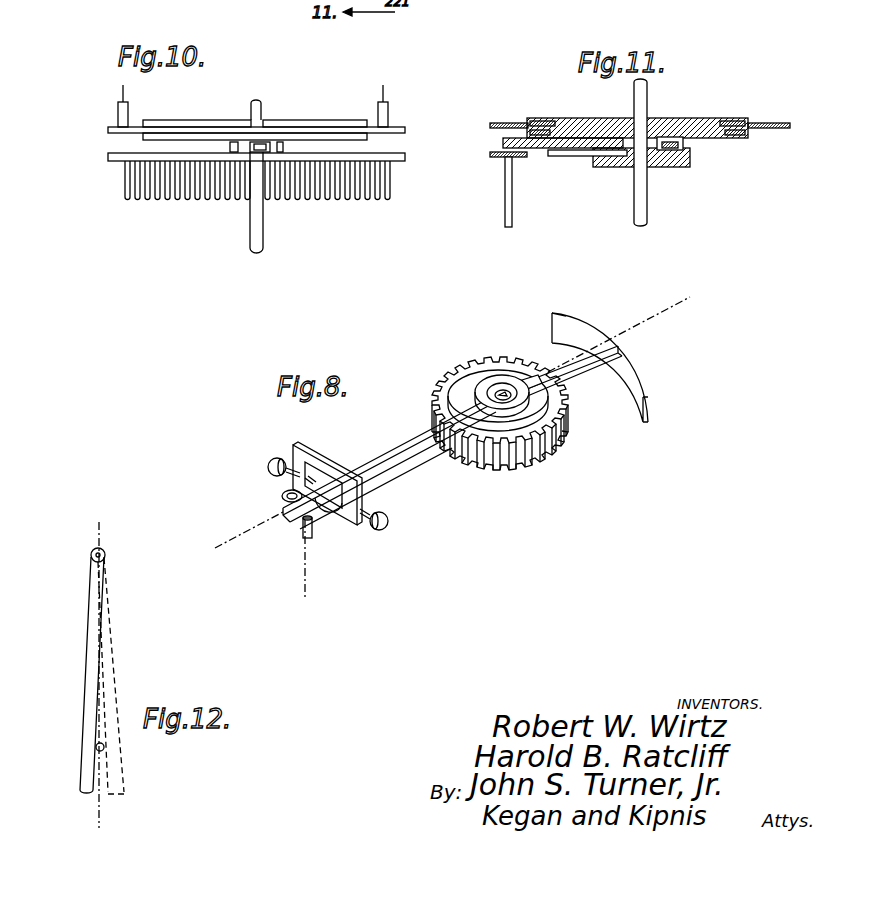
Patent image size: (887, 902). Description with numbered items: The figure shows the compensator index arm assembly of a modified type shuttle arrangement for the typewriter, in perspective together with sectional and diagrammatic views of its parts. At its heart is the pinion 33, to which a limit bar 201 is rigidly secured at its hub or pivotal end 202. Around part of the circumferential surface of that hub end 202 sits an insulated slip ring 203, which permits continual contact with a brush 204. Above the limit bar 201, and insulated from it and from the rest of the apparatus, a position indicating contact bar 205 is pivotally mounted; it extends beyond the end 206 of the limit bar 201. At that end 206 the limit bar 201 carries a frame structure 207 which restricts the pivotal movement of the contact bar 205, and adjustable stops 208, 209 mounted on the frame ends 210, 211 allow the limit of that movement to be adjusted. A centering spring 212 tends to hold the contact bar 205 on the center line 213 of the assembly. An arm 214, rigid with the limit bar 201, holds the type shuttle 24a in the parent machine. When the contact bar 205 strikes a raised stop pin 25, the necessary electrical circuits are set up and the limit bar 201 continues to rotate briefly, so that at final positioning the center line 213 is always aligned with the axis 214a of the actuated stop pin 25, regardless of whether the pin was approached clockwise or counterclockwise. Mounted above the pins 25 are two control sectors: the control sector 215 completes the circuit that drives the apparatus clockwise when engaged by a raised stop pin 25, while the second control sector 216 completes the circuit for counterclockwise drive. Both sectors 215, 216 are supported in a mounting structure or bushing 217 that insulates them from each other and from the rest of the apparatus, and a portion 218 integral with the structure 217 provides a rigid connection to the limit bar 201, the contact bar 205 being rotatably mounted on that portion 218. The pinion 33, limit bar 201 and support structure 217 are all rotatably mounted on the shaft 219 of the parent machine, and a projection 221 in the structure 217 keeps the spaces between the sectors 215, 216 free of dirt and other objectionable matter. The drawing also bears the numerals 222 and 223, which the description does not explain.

In FIG. 10, the stop pin 25 is at (176, 200).
In FIG. 11, the stop pin 25 is at (505, 193).
In FIG. 8, the stop pin 25 is at (300, 527).
In FIG. 12, the stop pin 25 is at (104, 748).
In FIG. 11, the pinion 33 is at (590, 165).
In FIG. 8, the pinion 33 is at (545, 457).
In FIG. 8, the type shuttle 24a is at (655, 405).
In FIG. 11, the limit bar 201 is at (570, 157).
In FIG. 8, the limit bar 201 is at (425, 457).
In FIG. 8, the hub or pivotal end 202 is at (532, 415).
In FIG. 11, the insulated slip ring 203 is at (683, 152).
In FIG. 8, the insulated slip ring 203 is at (507, 430).
In FIG. 11, the brush 204 is at (683, 142).
In FIG. 8, the brush 204 is at (545, 378).
In FIG. 10, the position indicating contact bar 205 is at (257, 150).
In FIG. 11, the position indicating contact bar 205 is at (503, 142).
In FIG. 8, the position indicating contact bar 205 is at (370, 470).
In FIG. 12, the position indicating contact bar 205 is at (93, 716).
In FIG. 8, the end of limit bar 206 is at (287, 484).
In FIG. 8, the frame structure 207 is at (352, 520).
In FIG. 8, the adjustable stop 208 is at (268, 466).
In FIG. 8, the adjustable stop 209 is at (388, 523).
In FIG. 8, the end of frame 210 is at (297, 470).
In FIG. 8, the end of frame 211 is at (352, 498).
In FIG. 8, the centering spring 212 is at (325, 520).
In FIG. 8, the center line 213 is at (262, 522).
In FIG. 12, the center line 213 is at (102, 817).
In FIG. 8, the arm 214 is at (570, 366).
In FIG. 8, the axis of stop pin 214a is at (305, 585).
In FIG. 10, the control sector 215 is at (135, 130).
In FIG. 11, the control sector 215 is at (512, 122).
In FIG. 10, the second control sector 216 is at (388, 128).
In FIG. 10, the mounting structure or bushing 217 is at (168, 120).
In FIG. 11, the mounting structure or bushing 217 is at (672, 120).
In FIG. 11, the portion 218 is at (630, 145).
In FIG. 10, the shaft 219 is at (258, 222).
In FIG. 11, the shaft 219 is at (645, 192).
In FIG. 8, the shaft 219 is at (500, 394).
In FIG. 12, the shaft 219 is at (92, 560).
In FIG. 10, the projection 221 is at (261, 120).
In FIG. 10, the pin 222 is at (120, 113).
In FIG. 10, the pin 223 is at (378, 110).